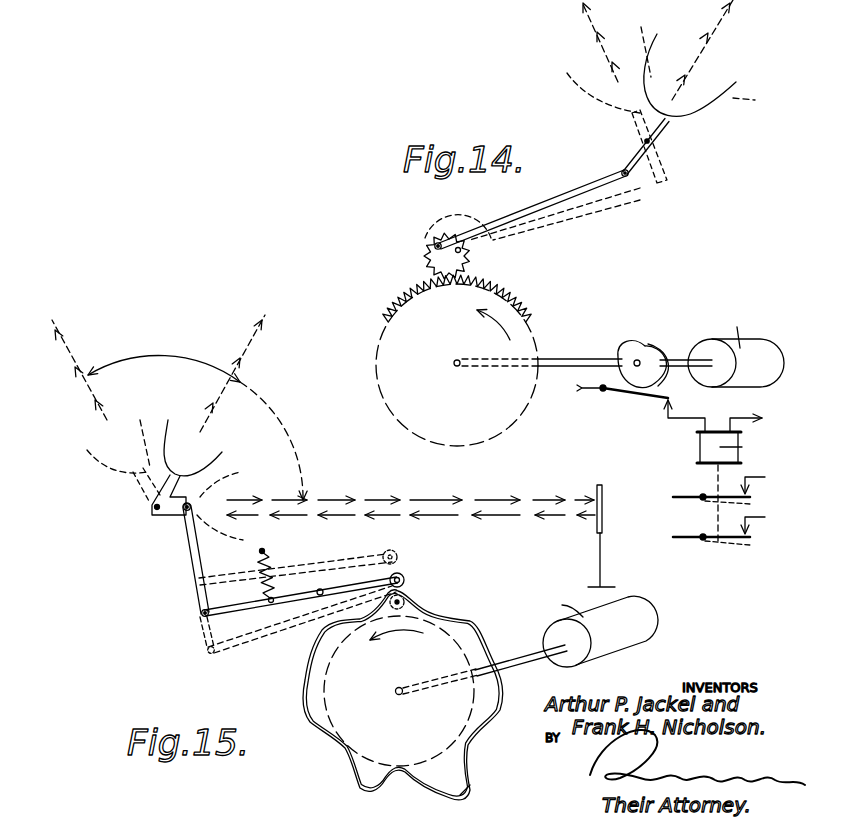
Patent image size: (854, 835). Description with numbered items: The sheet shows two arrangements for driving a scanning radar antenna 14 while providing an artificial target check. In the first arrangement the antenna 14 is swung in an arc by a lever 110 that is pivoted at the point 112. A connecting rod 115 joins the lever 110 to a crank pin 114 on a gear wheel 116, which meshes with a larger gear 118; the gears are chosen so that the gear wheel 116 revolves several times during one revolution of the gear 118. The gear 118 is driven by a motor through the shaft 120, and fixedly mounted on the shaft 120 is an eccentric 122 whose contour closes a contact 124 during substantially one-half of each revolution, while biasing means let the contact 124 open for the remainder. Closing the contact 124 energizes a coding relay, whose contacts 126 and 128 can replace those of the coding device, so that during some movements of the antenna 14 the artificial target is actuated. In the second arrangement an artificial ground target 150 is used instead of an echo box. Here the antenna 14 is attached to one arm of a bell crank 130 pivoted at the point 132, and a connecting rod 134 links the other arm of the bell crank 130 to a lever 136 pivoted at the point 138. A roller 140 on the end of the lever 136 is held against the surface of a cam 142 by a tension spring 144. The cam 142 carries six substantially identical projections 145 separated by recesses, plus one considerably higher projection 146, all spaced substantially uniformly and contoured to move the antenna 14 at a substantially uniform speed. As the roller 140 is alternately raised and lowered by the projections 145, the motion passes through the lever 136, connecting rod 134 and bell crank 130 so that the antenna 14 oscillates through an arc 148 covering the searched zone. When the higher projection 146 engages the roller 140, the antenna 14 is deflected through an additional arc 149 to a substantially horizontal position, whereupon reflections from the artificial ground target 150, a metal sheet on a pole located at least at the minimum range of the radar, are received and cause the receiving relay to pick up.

In FIG. 14, the antenna 14 is at (710, 110).
In FIG. 15, the antenna 14 is at (168, 420).
In FIG. 14, the lever 110 is at (660, 127).
In FIG. 14, the pivot point 112 is at (655, 141).
In FIG. 14, the crank pin 114 is at (432, 237).
In FIG. 14, the connecting rod 115 is at (543, 203).
In FIG. 14, the gear wheel 116 is at (487, 265).
In FIG. 14, the gear 118 is at (508, 290).
In FIG. 14, the shaft 120 is at (573, 358).
In FIG. 14, the eccentric 122 is at (637, 345).
In FIG. 14, the contact 124 is at (647, 398).
In FIG. 14, the contact of relay CTM 126 is at (757, 493).
In FIG. 14, the contact of relay CTM 128 is at (757, 533).
In FIG. 15, the bell crank 130 is at (157, 483).
In FIG. 15, the pivot point 132 is at (155, 508).
In FIG. 15, the connecting rod 134 is at (188, 548).
In FIG. 15, the lever 136 is at (245, 617).
In FIG. 15, the pivot point 138 is at (320, 589).
In FIG. 15, the roller 140 is at (403, 575).
In FIG. 15, the cam 142 is at (360, 733).
In FIG. 15, the tension spring 144 is at (275, 563).
In FIG. 15, the projections 145 is at (415, 599).
In FIG. 15, the projection 146 is at (468, 795).
In FIG. 15, the arc 148 is at (163, 358).
In FIG. 15, the additional arc 149 is at (282, 435).
In FIG. 15, the artificial ground target 150 is at (597, 530).